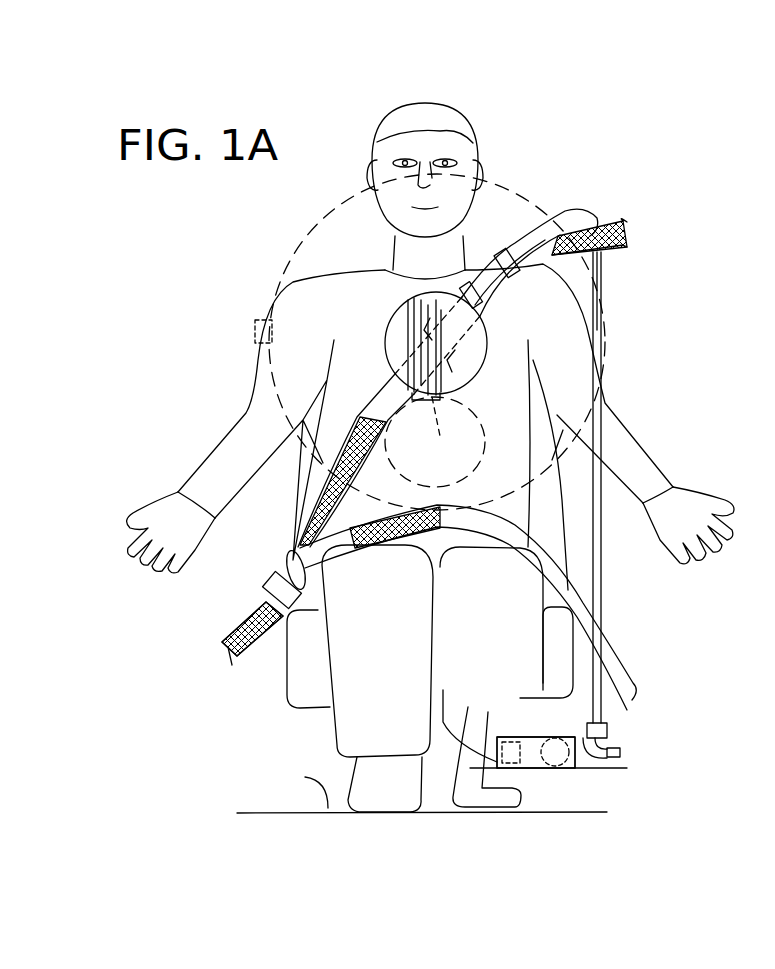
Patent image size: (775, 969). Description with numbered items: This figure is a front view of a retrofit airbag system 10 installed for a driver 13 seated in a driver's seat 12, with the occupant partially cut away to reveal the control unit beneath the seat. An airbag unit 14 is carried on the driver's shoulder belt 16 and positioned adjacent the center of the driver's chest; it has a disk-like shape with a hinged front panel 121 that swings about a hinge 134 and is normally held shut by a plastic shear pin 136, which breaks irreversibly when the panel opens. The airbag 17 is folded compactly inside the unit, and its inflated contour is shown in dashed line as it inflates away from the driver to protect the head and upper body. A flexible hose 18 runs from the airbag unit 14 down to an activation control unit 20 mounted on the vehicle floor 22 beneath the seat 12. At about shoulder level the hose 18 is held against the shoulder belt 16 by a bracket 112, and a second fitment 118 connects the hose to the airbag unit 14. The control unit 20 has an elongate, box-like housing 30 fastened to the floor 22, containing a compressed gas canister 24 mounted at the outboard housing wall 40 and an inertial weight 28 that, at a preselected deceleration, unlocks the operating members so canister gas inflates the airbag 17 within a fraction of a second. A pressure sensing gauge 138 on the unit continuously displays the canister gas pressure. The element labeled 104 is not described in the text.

The retrofit airbag system 10 is at (566, 176).
The driver's seat 12 is at (284, 704).
The driver 13 is at (468, 118).
The airbag unit 14 is at (386, 320).
The shoulder belt 16 is at (607, 217).
The airbag 17 is at (291, 251).
The flexible hose 18 is at (601, 283).
The activation control unit 20 is at (510, 726).
The vehicle floor 22 is at (296, 781).
The canister 24 is at (533, 770).
The inertial weight 28 is at (490, 770).
The housing 30 is at (540, 737).
The outboard housing wall 40 is at (587, 768).
The retractor connector 104 is at (617, 731).
The bracket 112 is at (516, 243).
The second fitment 118 is at (485, 303).
The hinged front panel 121 is at (482, 434).
The hinge 134 is at (435, 442).
The shear pin 136 is at (255, 325).
The pressure sensing gauge 138 is at (622, 757).